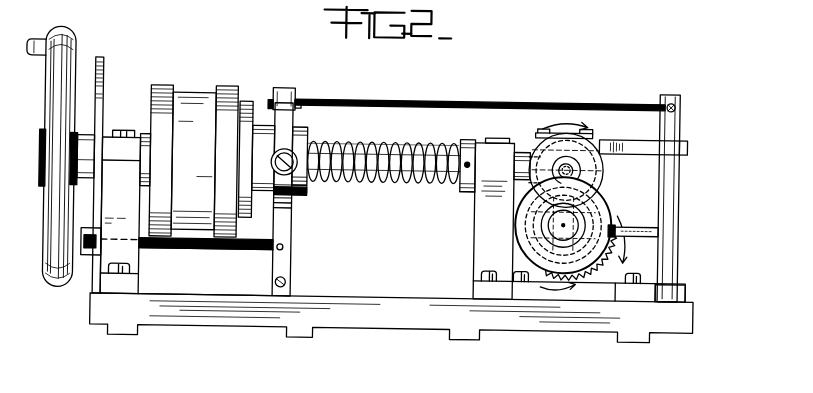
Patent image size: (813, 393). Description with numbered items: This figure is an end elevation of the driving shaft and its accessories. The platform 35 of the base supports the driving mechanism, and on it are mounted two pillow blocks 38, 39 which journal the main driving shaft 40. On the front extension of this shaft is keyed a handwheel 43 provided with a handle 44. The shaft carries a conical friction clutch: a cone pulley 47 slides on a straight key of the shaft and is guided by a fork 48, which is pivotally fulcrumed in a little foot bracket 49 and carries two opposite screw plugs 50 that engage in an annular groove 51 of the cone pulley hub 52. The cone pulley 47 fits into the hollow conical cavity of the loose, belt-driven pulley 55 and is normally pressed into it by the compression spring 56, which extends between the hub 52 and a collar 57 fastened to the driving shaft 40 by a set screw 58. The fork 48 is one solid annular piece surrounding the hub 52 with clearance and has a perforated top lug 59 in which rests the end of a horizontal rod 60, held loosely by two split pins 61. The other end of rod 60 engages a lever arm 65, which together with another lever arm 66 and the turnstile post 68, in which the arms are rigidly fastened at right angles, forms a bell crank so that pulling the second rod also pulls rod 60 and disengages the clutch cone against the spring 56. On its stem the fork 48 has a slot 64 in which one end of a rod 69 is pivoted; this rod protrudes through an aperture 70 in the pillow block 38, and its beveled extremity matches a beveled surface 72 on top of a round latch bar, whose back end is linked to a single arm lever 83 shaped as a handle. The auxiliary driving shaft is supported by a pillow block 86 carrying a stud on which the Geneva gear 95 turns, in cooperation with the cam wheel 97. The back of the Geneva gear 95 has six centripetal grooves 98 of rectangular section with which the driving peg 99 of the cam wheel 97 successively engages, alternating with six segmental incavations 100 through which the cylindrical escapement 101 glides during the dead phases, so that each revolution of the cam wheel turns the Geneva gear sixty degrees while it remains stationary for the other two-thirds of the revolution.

The platform 35 is at (378, 321).
The pillow block 38 is at (131, 281).
The pillow block 39 is at (483, 150).
The driving shaft 40 is at (373, 140).
The handwheel 43 is at (73, 46).
The handle 44 is at (33, 39).
The cone pulley 47 is at (245, 99).
The fork 48 is at (291, 223).
The foot bracket 49 is at (286, 279).
The screw plug 50 is at (291, 155).
The annular groove 51 is at (290, 200).
The cone pulley hub 52 is at (301, 125).
The loose belt-driven pulley 55 is at (184, 91).
The compression spring 56 is at (380, 181).
The collar 57 is at (462, 188).
The set screw 58 is at (465, 136).
The perforated top lug 59 is at (281, 85).
The horizontal rod 60 is at (411, 96).
The split pin 61 is at (267, 96).
The slot 64 is at (293, 250).
The lever arm 65 is at (682, 96).
The lever arm 66 is at (629, 219).
The turnstile post 68 is at (678, 189).
The rod 69 is at (189, 248).
The aperture 70 is at (122, 247).
The beveled surface 72 is at (88, 257).
The single arm lever 83 is at (100, 80).
The pillow block 86 is at (601, 283).
The Geneva gear 95 is at (615, 173).
The cam wheel 97 is at (590, 147).
The centripetal groove 98 is at (601, 173).
The driving peg 99 is at (538, 162).
The segmental incavation 100 is at (530, 200).
The cylindrical escapement 101 is at (564, 150).